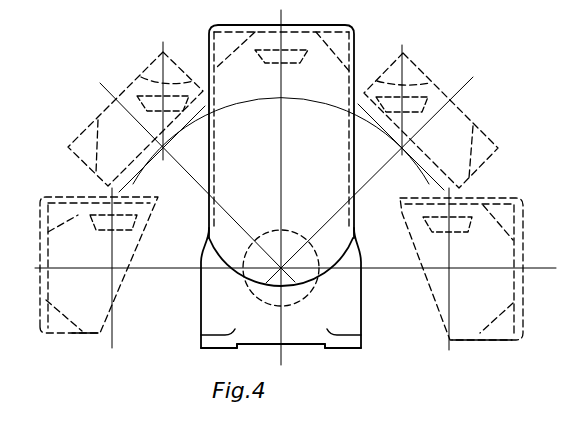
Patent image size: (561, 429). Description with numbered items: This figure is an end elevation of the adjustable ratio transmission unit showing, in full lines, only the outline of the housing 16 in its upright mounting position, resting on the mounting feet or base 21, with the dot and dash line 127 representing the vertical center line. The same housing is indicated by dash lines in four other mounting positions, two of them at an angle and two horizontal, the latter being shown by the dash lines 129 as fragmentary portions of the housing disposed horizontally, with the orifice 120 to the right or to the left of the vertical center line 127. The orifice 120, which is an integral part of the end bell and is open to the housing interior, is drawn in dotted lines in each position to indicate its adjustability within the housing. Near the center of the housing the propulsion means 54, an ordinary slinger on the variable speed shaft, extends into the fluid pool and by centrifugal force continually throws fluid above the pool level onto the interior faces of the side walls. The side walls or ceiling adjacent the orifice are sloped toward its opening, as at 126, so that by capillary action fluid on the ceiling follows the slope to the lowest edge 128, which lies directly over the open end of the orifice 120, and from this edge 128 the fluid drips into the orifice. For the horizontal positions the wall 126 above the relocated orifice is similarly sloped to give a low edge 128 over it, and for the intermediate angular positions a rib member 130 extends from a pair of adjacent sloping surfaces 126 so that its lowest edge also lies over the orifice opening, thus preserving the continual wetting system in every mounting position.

The housing 16 is at (350, 210).
The mounting feet or base 21 is at (356, 345).
The propulsion means 54 is at (289, 296).
The orifice 120 is at (303, 60).
The sloping side wall or ceiling 126 is at (300, 32).
The vertical center line 127 is at (282, 123).
The lowest edge 128 is at (280, 25).
The dash lines indicating housing in horizontal position 129 is at (57, 343).
The rib member 130 is at (177, 58).